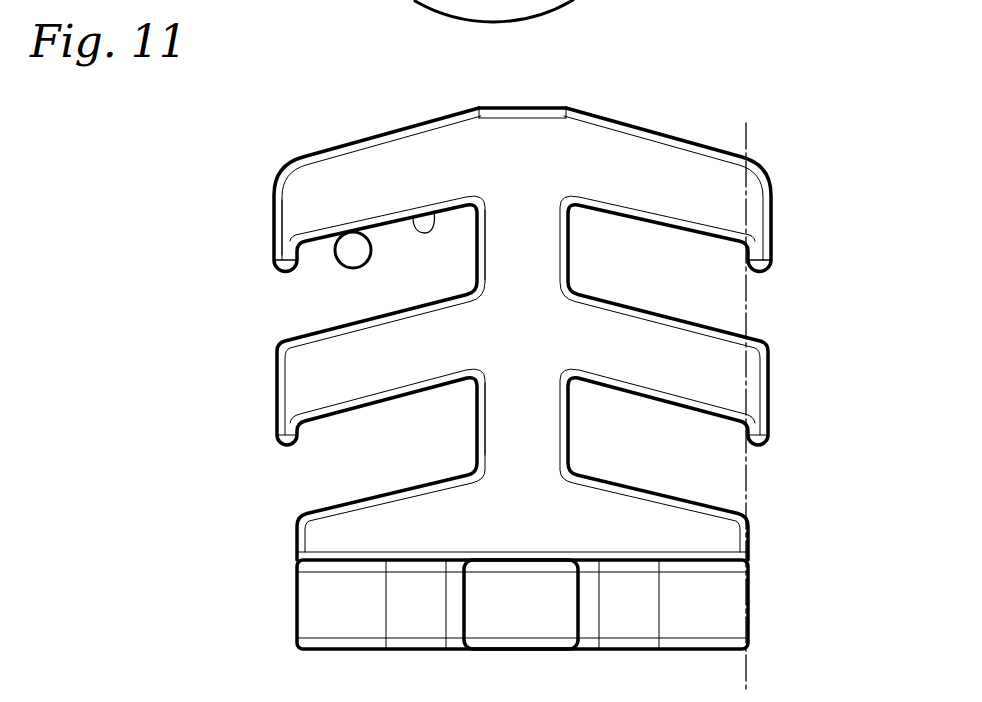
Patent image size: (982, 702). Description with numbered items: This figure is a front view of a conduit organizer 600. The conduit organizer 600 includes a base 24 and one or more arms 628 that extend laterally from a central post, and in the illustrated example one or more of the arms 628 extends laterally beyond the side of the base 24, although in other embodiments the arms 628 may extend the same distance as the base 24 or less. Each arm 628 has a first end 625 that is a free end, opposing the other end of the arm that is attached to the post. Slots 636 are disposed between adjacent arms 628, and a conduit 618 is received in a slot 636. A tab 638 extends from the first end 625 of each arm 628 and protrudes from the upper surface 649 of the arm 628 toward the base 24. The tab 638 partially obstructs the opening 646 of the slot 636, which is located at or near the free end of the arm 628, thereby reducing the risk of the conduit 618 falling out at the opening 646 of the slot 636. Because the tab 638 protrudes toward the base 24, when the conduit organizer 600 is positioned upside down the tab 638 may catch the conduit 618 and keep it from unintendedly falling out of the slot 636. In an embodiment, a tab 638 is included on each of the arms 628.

The conduit organizer 600 is at (768, 90).
The arm 628 is at (393, 152).
The upper surface of the arm 649 is at (413, 217).
The conduit 618 is at (352, 243).
The first end 625 is at (295, 202).
The tab 638 is at (270, 272).
The slot 636 is at (322, 283).
The opening of the slot 646 is at (283, 317).
The base 24 is at (315, 606).